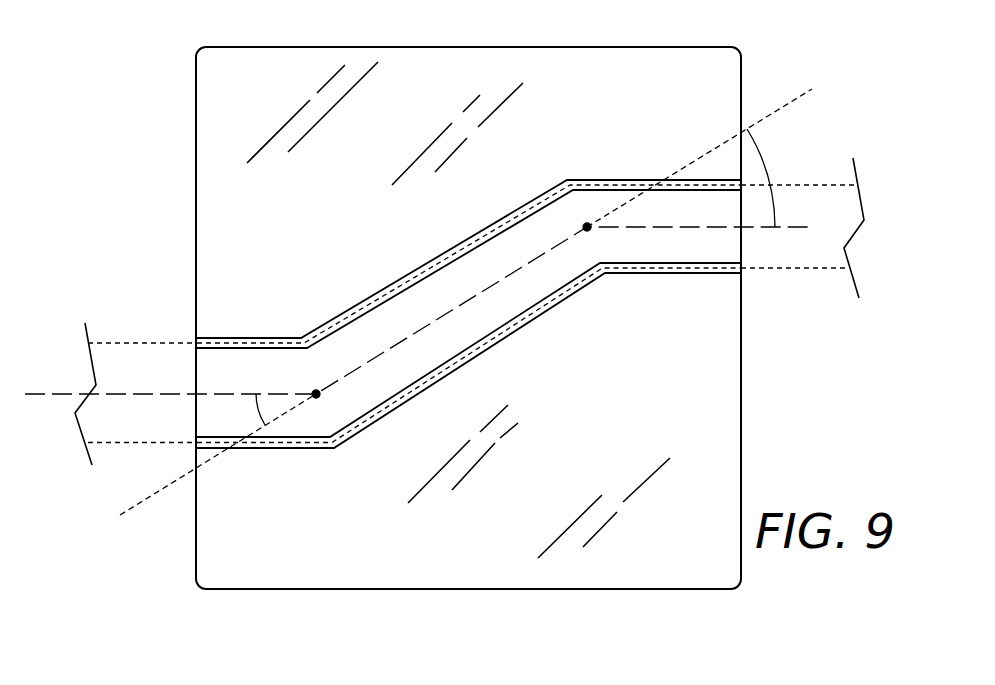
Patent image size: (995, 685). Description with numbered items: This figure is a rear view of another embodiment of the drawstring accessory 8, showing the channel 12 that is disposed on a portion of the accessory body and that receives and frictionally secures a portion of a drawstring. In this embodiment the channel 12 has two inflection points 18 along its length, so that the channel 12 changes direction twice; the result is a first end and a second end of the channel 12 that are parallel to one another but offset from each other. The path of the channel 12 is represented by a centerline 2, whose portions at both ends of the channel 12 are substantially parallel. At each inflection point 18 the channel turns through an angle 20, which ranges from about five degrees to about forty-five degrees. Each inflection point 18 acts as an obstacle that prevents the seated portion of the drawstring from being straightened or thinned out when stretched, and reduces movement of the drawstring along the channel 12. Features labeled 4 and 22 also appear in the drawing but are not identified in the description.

The centerline 2 is at (62, 393).
The second side 4 is at (827, 272).
The accessory 8 is at (657, 47).
The channel 12 is at (733, 250).
The inflection point 18 is at (587, 227).
The angle 20 is at (770, 158).
The channel 22 is at (203, 350).